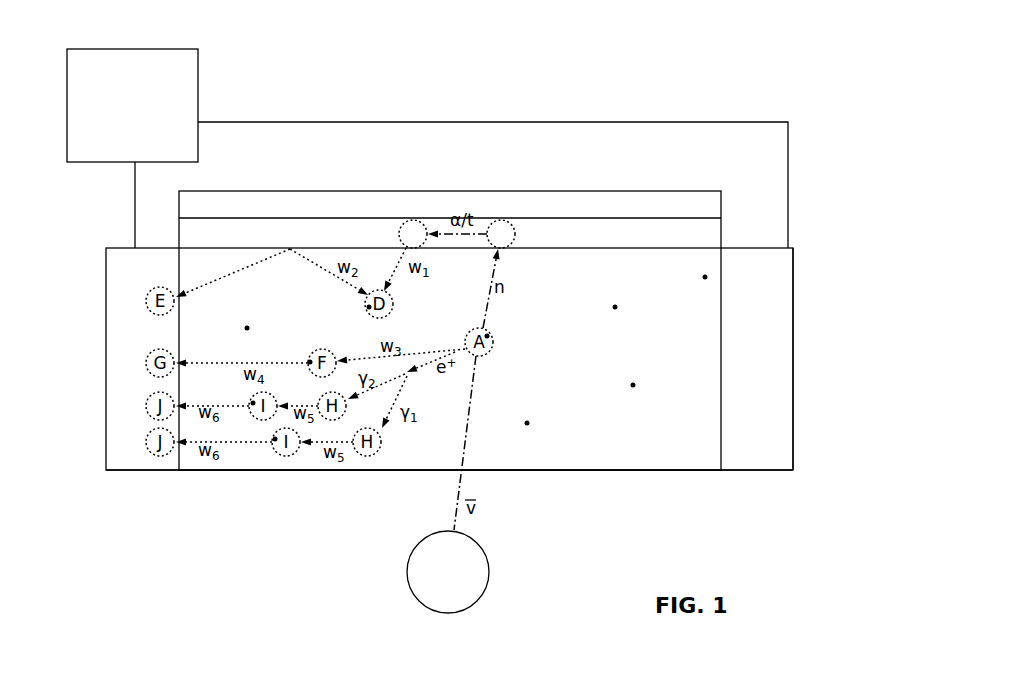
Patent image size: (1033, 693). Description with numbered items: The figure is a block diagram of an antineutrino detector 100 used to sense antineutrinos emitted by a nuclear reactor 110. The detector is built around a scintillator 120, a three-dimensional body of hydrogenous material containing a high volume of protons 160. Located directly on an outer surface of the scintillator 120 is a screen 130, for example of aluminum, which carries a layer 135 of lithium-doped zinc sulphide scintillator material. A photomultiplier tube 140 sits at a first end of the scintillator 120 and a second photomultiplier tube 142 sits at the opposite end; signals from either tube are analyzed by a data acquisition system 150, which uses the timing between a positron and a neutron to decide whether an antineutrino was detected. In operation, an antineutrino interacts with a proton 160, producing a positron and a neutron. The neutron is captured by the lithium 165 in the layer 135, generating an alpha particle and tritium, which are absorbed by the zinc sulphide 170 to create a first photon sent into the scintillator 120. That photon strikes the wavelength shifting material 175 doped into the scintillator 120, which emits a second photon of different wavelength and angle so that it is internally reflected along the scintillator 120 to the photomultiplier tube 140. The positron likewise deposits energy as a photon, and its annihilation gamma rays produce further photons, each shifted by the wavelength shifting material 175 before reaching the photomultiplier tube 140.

The antineutrino detector 100 is at (659, 43).
The nuclear reactor 110 is at (410, 558).
The scintillator 120 is at (667, 470).
The screen 130 is at (723, 191).
The layer 135 is at (723, 218).
The photomultiplier tube 140 is at (105, 290).
The second photomultiplier tube 142 is at (772, 470).
The data acquisition system 150 is at (132, 148).
The protons 160 is at (247, 328).
The lithium 165 is at (493, 231).
The zinc sulphide 170 is at (402, 230).
The wavelength shifting material 175 is at (369, 307).